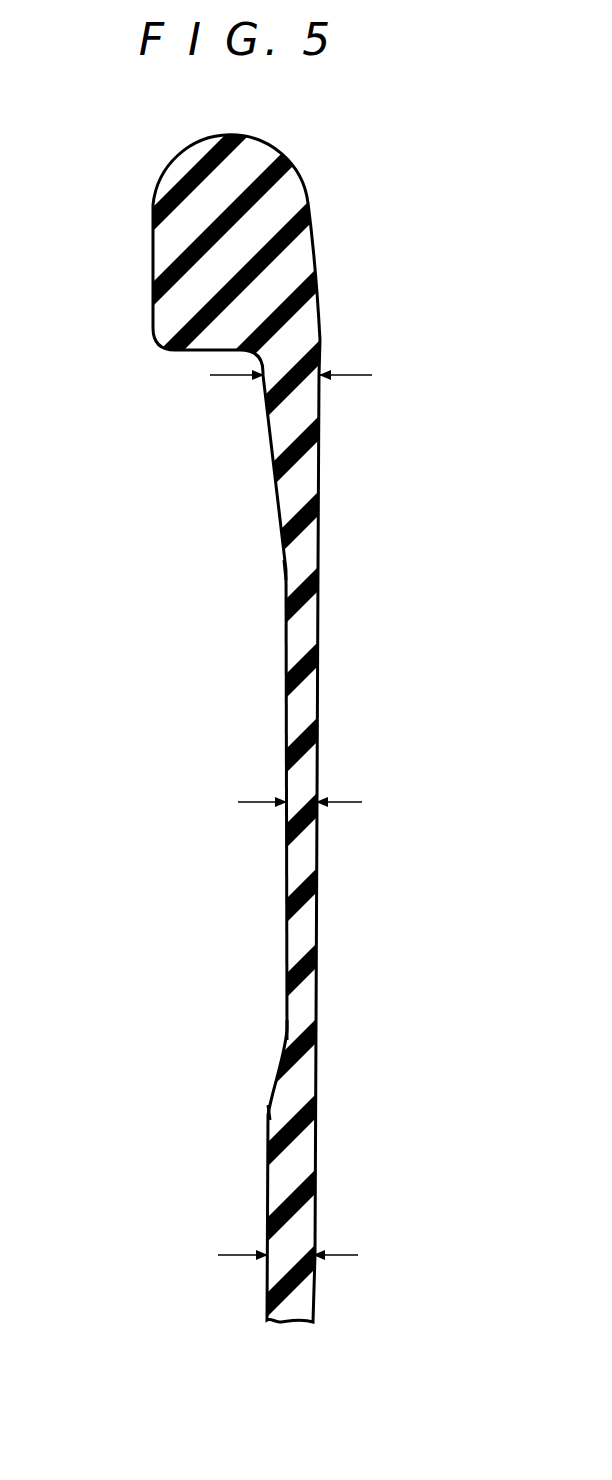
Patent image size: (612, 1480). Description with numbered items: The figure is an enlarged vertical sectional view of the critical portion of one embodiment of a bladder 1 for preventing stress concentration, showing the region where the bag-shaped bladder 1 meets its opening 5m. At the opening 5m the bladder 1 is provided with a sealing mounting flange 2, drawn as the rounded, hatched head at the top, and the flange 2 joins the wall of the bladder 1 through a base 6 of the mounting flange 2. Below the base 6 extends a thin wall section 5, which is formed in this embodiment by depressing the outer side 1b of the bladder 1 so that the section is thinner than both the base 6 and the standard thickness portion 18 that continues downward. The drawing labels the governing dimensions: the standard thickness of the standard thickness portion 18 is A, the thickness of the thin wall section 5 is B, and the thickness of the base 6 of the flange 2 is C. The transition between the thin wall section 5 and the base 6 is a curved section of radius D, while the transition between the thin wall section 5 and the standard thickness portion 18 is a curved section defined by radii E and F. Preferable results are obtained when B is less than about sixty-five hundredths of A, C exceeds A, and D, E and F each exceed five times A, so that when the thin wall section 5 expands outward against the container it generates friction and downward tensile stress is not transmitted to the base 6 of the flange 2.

The bladder 1 is at (250, 740).
The flange 2 is at (156, 250).
The thin wall section 5 is at (287, 842).
The opening 5m is at (319, 323).
The base of the mounting flange 6 is at (263, 412).
The standard thickness portion 18 is at (268, 1200).
The outer side of the bladder 1b is at (286, 672).
The standard thickness A is at (305, 1283).
The thickness of the thin wall section B is at (300, 800).
The thickness of the base of the mounting flange C is at (290, 376).
The radius of curvature between thin wall section and flange base D is at (283, 566).
The radius of curvature between thin wall section and standard thickness portion E is at (285, 1042).
The radius of curvature between thin wall section and standard thickness portion F is at (273, 1099).